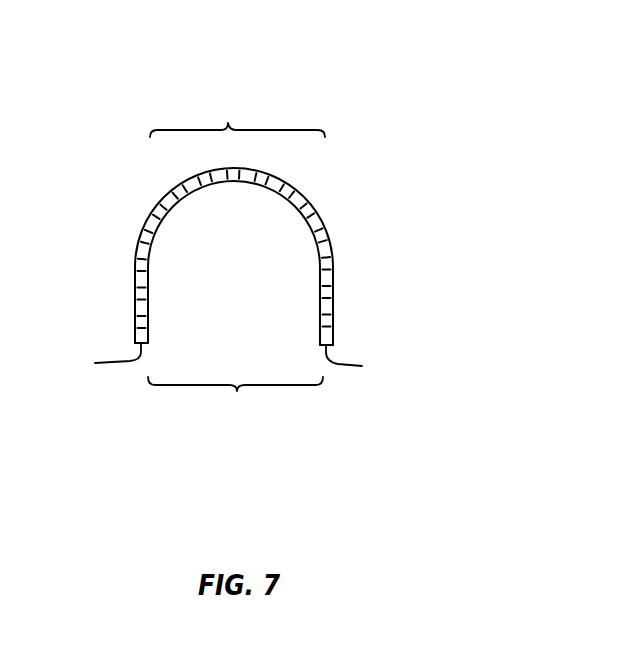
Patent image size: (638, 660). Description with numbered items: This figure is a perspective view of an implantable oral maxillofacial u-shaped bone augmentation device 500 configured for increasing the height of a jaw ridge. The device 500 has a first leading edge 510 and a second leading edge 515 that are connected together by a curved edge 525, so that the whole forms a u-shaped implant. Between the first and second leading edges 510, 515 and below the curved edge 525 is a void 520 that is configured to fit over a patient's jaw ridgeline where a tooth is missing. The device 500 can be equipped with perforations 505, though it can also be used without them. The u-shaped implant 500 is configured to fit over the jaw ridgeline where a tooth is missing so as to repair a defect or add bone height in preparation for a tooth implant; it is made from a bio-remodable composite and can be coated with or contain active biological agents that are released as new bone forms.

The u-shaped bone augmentation device 500 is at (356, 204).
The perforations 505 is at (335, 267).
The first leading edge 510 is at (367, 363).
The second leading edge 515 is at (94, 360).
The void 520 is at (237, 391).
The curved edge 525 is at (228, 122).